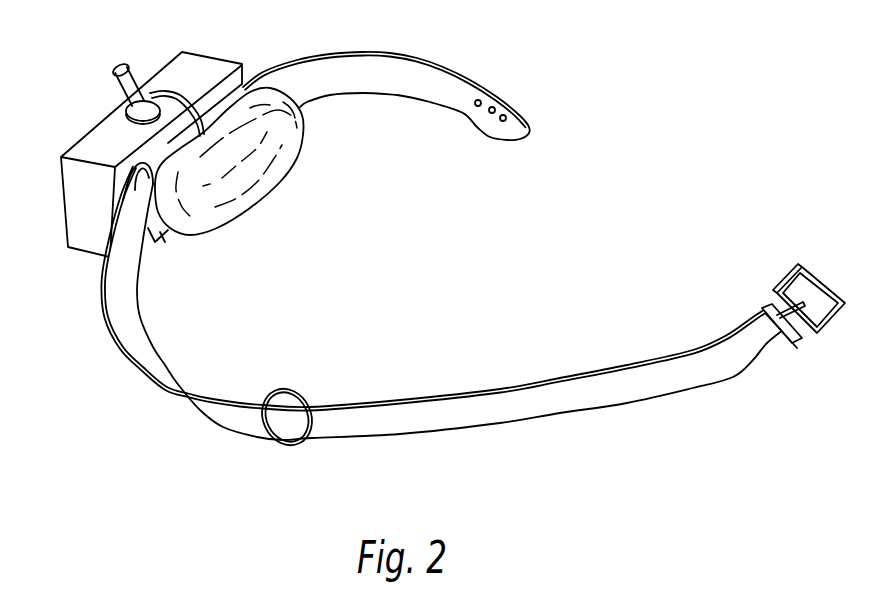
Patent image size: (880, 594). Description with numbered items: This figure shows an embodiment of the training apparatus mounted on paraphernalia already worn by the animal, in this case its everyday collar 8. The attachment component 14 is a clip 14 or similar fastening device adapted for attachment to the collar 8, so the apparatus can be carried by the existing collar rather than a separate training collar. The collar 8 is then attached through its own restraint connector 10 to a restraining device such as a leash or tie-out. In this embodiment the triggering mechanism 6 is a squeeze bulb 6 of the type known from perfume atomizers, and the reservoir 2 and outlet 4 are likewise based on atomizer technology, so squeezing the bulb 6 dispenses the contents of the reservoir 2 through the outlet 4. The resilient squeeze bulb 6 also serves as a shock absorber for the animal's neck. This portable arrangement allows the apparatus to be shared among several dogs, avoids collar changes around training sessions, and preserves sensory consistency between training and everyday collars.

The reservoir 2 is at (86, 203).
The outlet 4 is at (146, 97).
The squeeze bulb triggering mechanism 6 is at (302, 124).
The everyday collar 8 is at (518, 412).
The restraint connector 10 is at (292, 395).
The clip 14 is at (230, 100).